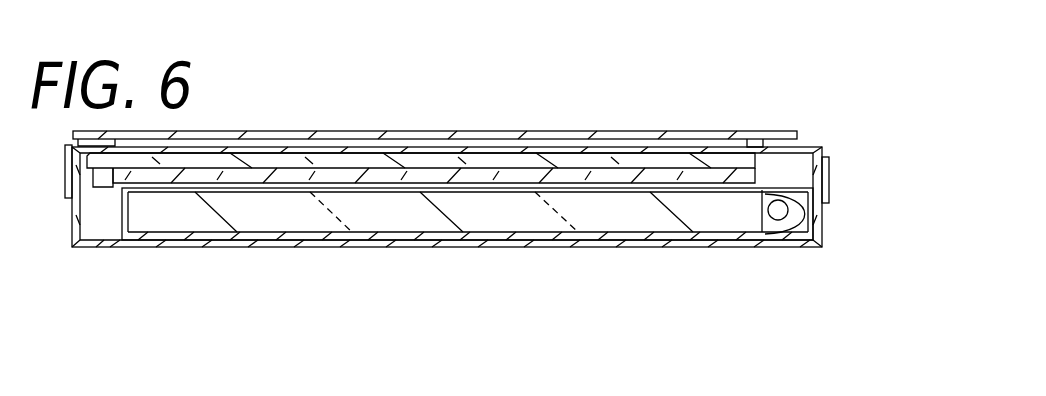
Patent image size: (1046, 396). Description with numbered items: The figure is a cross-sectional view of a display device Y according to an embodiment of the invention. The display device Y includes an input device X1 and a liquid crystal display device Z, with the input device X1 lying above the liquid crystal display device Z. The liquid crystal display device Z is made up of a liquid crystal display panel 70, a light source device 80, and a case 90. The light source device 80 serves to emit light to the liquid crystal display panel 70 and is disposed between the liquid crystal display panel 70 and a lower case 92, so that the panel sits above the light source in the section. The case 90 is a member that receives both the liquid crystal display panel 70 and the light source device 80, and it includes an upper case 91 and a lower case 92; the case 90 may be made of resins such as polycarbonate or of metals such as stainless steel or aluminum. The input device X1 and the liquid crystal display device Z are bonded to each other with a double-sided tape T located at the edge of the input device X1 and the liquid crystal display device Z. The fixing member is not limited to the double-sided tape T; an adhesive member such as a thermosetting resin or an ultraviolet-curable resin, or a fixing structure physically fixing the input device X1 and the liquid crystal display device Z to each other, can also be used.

The liquid crystal display panel 70 is at (771, 173).
The light source device 80 is at (645, 225).
The case 90 is at (138, 308).
The upper case 91 is at (65, 195).
The lower case 92 is at (108, 248).
The double-sided tape T is at (778, 142).
The input device X1 is at (494, 82).
The display device Y is at (697, 47).
The liquid crystal display device Z is at (388, 260).